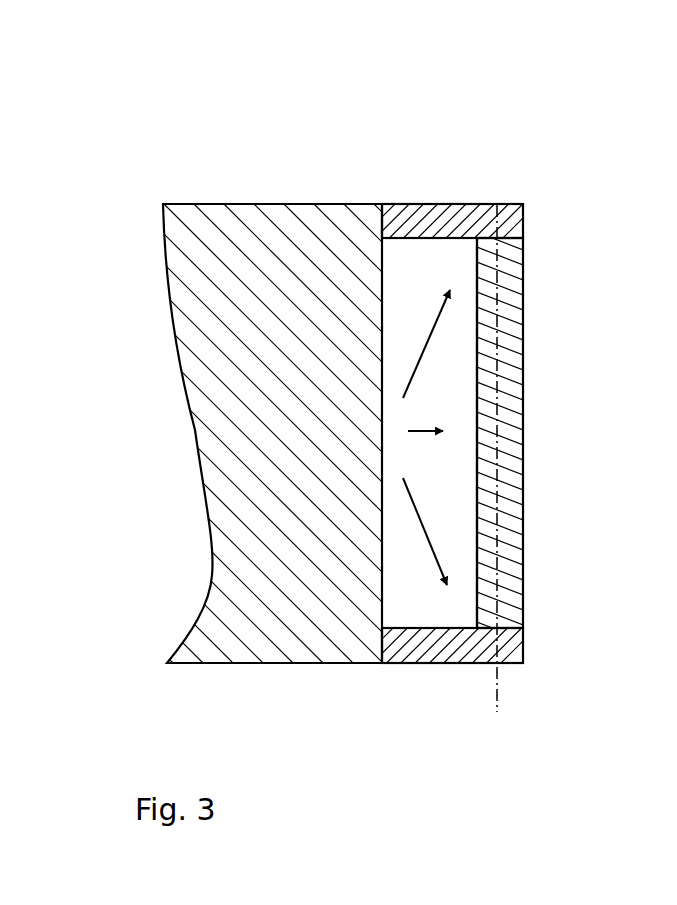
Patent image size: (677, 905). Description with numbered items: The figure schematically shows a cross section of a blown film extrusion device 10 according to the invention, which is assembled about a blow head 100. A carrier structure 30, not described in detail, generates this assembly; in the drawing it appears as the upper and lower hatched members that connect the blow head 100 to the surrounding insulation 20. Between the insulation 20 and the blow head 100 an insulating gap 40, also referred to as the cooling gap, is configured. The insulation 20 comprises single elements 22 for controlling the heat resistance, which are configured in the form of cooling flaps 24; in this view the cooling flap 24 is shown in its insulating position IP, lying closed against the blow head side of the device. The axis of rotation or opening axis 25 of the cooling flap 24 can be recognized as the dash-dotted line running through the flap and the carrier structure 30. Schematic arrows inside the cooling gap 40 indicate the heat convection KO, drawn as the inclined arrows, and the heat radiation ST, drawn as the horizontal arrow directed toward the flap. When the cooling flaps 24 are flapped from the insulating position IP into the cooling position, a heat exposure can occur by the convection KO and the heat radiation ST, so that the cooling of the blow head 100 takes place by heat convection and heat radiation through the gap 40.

The blown film extrusion device 10 is at (455, 158).
The insulation 20 is at (559, 412).
The element for controlling the heat resistance 22 is at (523, 335).
The cooling flap 24 is at (514, 405).
The opening axis 25 is at (497, 205).
The carrier structure 30 is at (388, 204).
The insulating gap 40 is at (423, 248).
The blow head 100 is at (213, 212).
The insulating position IP is at (552, 585).
The heat convection KO is at (423, 437).
The heat radiation ST is at (425, 446).